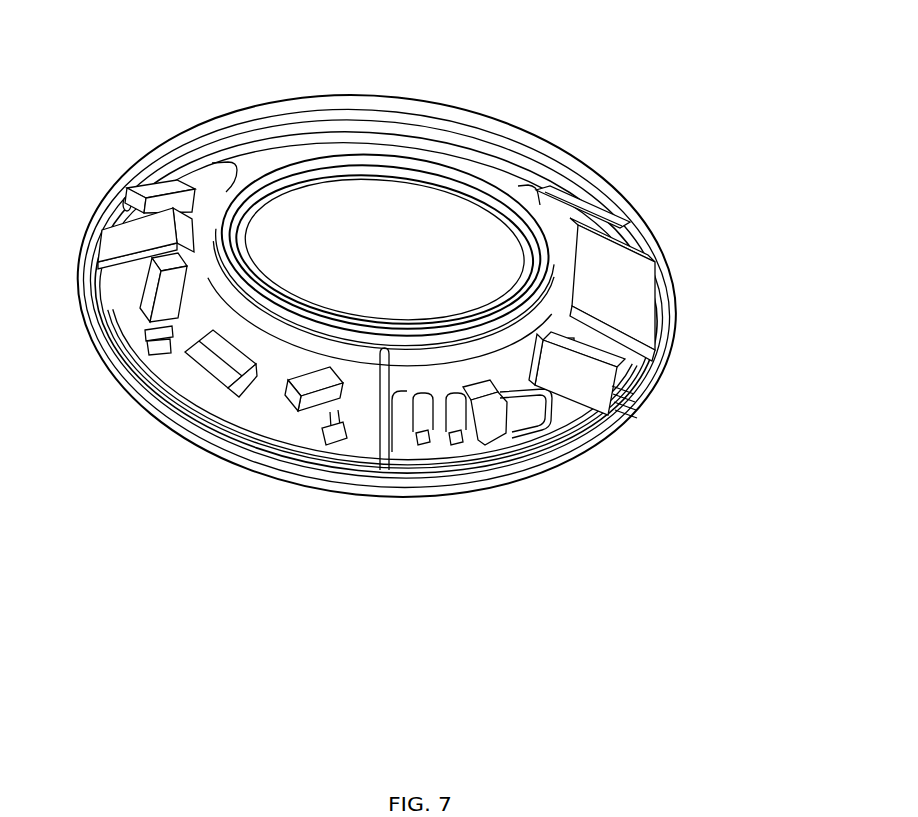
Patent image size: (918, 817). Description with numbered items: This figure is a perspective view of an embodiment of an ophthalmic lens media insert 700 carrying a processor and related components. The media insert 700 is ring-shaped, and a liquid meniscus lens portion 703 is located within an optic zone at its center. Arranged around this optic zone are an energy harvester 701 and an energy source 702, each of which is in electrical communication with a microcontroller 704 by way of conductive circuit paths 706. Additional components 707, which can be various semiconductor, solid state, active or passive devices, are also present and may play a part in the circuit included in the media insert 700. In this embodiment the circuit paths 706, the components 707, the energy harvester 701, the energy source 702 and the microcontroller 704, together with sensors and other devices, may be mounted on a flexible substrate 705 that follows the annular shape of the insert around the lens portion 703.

The media insert 700 is at (145, 88).
The energy harvester 701 is at (615, 272).
The energy source 702 is at (580, 387).
The liquid meniscus lens portion 703 is at (387, 237).
The microcontroller 704 is at (218, 358).
The flexible substrate 705 is at (646, 372).
The conductive circuit paths 706 is at (530, 427).
The components 707 is at (493, 417).